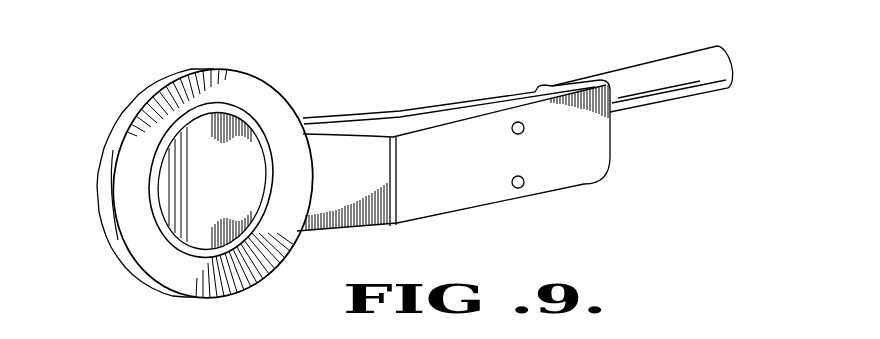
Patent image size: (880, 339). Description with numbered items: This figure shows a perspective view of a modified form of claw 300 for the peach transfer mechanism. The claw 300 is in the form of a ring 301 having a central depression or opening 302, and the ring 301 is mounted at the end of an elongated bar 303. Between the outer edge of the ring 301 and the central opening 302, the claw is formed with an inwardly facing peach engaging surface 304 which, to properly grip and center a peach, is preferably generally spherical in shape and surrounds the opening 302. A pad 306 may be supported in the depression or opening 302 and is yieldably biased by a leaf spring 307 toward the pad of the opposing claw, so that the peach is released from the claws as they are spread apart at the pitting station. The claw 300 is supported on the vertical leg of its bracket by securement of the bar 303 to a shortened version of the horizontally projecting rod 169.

The claw 300 is at (182, 70).
The ring 301 is at (108, 235).
The central depression or opening 302 is at (140, 192).
The elongated bar 303 is at (465, 203).
The peach engaging surface 304 is at (273, 97).
The pad 306 is at (171, 150).
The leaf spring 307 is at (273, 170).
The horizontally projecting rod 169 is at (663, 98).